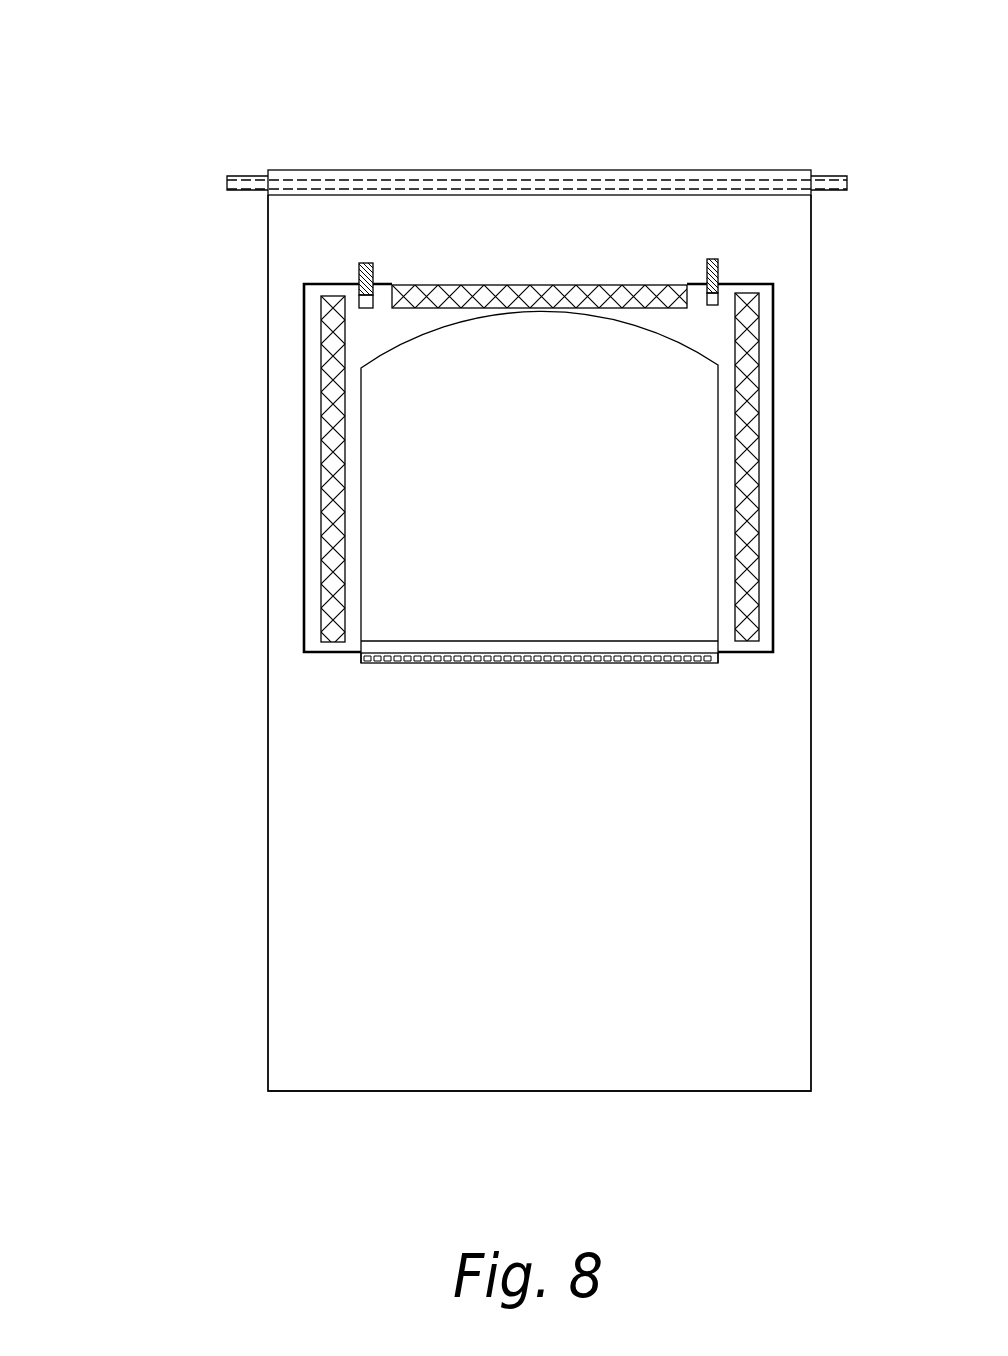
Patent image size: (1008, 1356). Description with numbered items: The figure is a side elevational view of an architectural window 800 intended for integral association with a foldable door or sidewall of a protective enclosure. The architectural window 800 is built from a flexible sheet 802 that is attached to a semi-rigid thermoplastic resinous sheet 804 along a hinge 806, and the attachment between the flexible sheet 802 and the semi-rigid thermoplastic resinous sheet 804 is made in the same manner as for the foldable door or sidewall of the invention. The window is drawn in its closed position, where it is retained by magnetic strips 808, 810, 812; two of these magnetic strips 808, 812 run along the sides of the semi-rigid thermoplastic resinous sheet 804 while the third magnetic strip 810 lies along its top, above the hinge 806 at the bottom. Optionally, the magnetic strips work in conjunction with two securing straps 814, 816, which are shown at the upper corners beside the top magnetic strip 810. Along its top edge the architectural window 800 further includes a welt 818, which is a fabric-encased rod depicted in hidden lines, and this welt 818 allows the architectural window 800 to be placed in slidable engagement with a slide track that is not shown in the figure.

The architectural window 800 is at (208, 300).
The flexible sheet 802 is at (793, 525).
The semi-rigid thermoplastic resinous sheet 804 is at (680, 405).
The hinge 806 is at (707, 654).
The magnetic strip 808 is at (758, 607).
The magnetic strip 810 is at (530, 285).
The magnetic strip 812 is at (327, 528).
The securing strap 814 is at (719, 265).
The securing strap 816 is at (373, 264).
The welt 818 is at (623, 180).